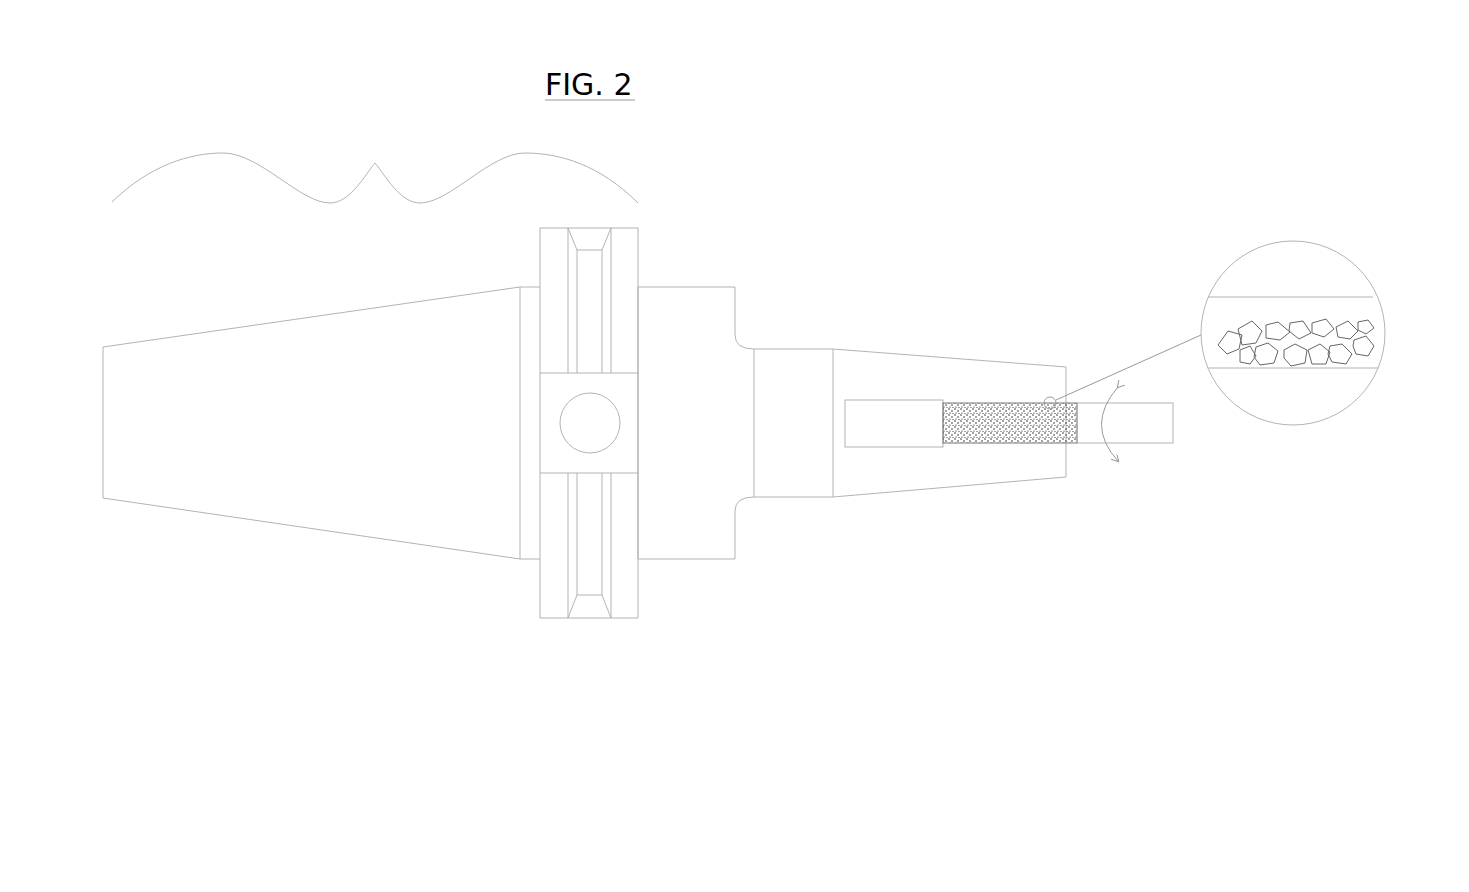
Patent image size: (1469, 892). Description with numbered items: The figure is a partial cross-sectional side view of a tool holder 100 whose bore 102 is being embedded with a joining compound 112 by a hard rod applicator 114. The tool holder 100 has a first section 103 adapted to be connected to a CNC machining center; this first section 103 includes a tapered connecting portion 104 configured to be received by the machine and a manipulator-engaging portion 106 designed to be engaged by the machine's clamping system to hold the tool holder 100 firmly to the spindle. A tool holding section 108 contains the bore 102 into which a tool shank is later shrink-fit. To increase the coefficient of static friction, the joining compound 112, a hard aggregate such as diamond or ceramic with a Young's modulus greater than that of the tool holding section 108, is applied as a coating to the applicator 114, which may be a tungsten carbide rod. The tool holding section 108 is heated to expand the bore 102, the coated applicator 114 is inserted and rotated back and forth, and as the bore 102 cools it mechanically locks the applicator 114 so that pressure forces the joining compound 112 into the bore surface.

The tool holder 100 is at (697, 268).
The bore 102 is at (1018, 422).
The first section 103 is at (375, 165).
The tapered connecting portion 104 is at (278, 373).
The manipulator-engaging portion 106 is at (638, 630).
The tool holding section 108 is at (1067, 330).
The joining compound 112 is at (1360, 358).
The applicator 114 is at (1115, 420).